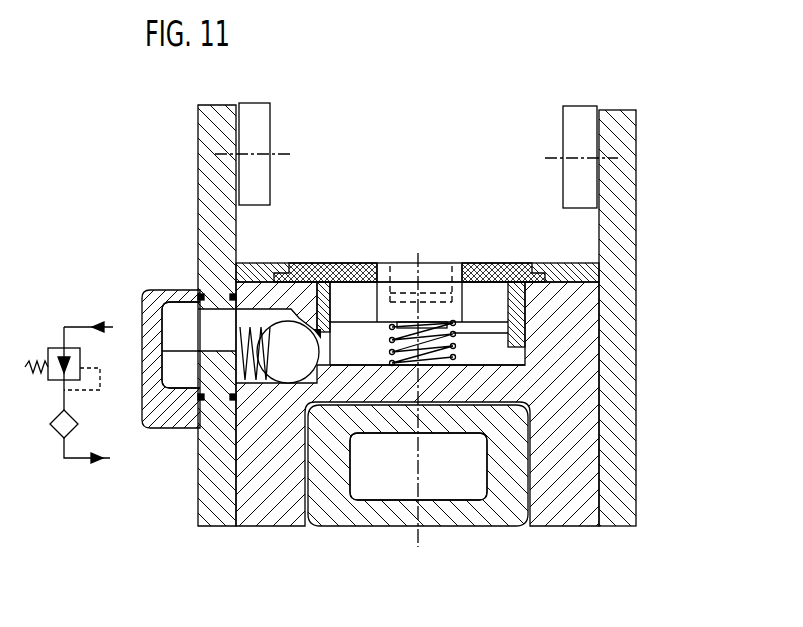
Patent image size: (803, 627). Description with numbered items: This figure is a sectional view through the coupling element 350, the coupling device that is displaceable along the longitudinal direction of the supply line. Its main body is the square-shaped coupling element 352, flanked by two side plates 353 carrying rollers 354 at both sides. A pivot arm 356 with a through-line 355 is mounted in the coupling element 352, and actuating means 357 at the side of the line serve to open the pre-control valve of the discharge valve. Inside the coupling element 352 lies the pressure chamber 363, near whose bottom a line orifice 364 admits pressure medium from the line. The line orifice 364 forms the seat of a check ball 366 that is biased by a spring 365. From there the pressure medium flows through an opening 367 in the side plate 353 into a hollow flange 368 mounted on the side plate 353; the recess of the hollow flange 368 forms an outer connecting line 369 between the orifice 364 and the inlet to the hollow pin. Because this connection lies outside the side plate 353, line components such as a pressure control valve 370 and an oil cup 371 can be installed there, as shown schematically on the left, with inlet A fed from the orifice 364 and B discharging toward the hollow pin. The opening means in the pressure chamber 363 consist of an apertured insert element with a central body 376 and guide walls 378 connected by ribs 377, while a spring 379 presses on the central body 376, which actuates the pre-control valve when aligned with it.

The coupling element 350 is at (412, 148).
The square-shaped coupling element 352 is at (577, 398).
The side plate 353 is at (615, 201).
The roller 354 is at (580, 141).
The through-line 355 is at (466, 486).
The pivot arm 356 is at (354, 512).
The actuating means 357 is at (426, 247).
The pressure chamber 363 is at (515, 358).
The line orifice 364 is at (332, 358).
The spring 365 is at (248, 328).
The check ball 366 is at (294, 333).
The opening 367 is at (196, 327).
The hollow flange 368 is at (152, 302).
The outer connecting line 369 is at (178, 375).
The pressure control valve 370 is at (53, 348).
The oil cup 371 is at (52, 434).
The central body 376 is at (447, 270).
The rib 377 is at (488, 297).
The guide wall 378 is at (522, 266).
The spring 379 is at (523, 332).